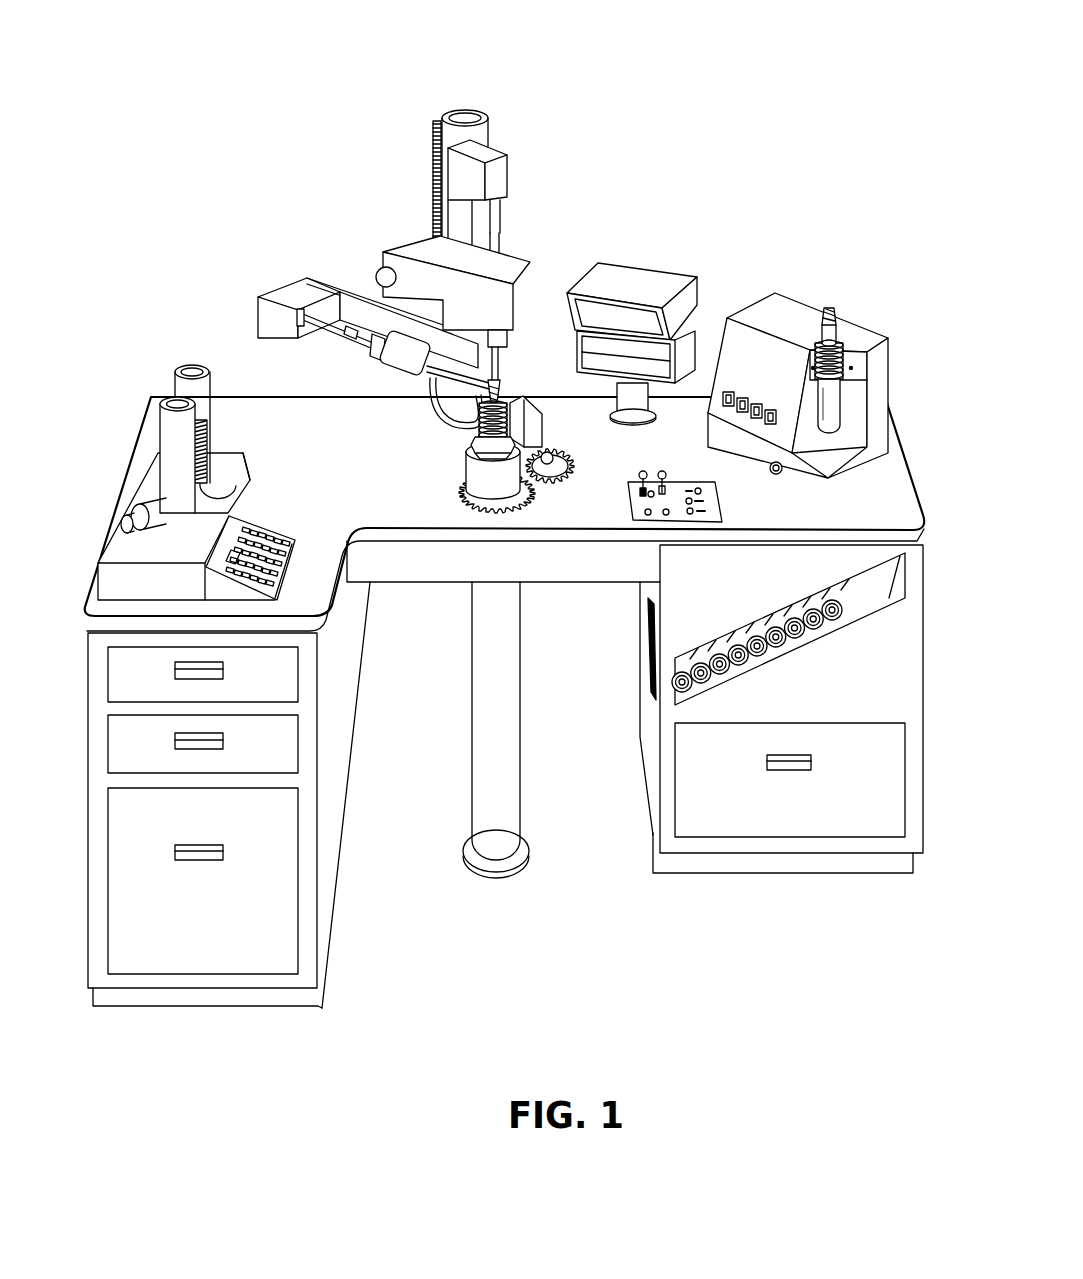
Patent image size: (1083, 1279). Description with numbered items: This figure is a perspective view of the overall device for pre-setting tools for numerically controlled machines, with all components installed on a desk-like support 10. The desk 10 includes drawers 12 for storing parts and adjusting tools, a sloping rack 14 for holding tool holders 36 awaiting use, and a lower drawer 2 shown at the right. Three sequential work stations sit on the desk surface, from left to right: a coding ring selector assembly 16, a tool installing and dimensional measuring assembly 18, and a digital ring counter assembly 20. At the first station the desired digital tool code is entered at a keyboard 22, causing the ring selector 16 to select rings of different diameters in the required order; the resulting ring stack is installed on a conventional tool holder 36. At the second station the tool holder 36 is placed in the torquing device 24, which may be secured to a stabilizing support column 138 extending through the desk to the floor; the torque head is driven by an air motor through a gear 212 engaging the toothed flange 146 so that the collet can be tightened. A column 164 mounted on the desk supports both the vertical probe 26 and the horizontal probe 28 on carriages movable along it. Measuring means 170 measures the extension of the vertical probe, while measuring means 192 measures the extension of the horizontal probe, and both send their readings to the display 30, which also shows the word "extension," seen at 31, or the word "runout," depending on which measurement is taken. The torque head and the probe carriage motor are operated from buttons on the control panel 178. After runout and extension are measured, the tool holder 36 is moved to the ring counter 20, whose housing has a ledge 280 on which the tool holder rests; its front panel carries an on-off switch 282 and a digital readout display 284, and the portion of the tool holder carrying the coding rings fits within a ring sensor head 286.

The drawer 2 is at (900, 826).
The desk-like support 10 is at (506, 702).
The drawers 12 is at (106, 790).
The sloping rack 14 is at (652, 645).
The coding ring selector assembly 16 is at (191, 441).
The tool installing and dimensional measuring assembly 18 is at (506, 507).
The digital ring counter assembly 20 is at (805, 362).
The keyboard 22 is at (287, 537).
The torquing device 24 is at (494, 456).
The vertical probe 26 is at (488, 236).
The horizontal probe 28 is at (334, 291).
The display 30 is at (619, 332).
The extension word display 31 is at (578, 343).
The tool holder 36 is at (479, 430).
The stabilizing support column 138 is at (521, 790).
The outwardly extending flange 146 is at (462, 468).
The column 164 is at (470, 112).
The measuring means 170 is at (500, 154).
The control panel 178 is at (628, 488).
The measuring means 192 is at (259, 311).
The gear 212 is at (549, 478).
The ledge 280 is at (853, 456).
The on-off switch 282 is at (773, 472).
The digital readout display 284 is at (722, 406).
The ring sensor head 286 is at (853, 369).